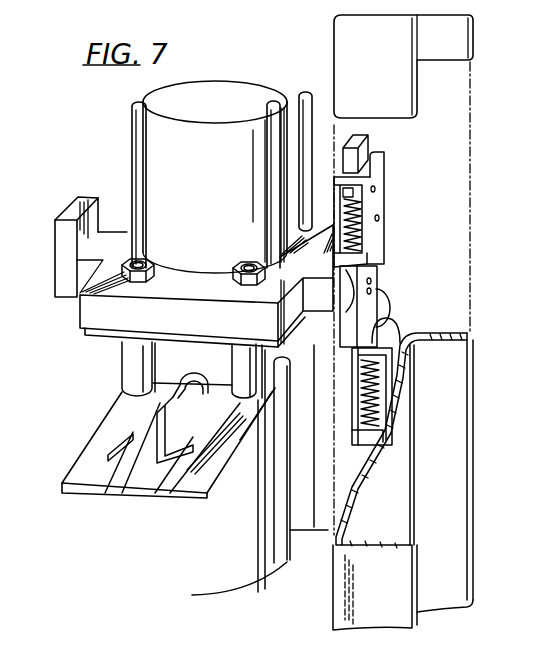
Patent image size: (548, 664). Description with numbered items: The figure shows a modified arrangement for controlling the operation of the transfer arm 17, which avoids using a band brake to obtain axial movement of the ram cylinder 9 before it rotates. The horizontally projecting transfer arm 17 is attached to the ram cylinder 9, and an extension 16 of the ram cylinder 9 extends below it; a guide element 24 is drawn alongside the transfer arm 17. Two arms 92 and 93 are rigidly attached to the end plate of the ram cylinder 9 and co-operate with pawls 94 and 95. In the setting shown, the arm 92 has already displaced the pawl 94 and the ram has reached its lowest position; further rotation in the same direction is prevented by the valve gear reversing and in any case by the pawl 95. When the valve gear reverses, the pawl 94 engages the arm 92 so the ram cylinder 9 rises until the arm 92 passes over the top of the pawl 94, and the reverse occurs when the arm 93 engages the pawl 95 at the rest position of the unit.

The ram cylinder 9 is at (203, 181).
The extension of the ram cylinder 16 is at (230, 580).
The transfer arm 17 is at (190, 484).
The guide rail clip 24 is at (118, 482).
The arm 92 is at (376, 265).
The arm 93 is at (73, 204).
The pawl 94 is at (389, 297).
The pawl 95 is at (356, 315).